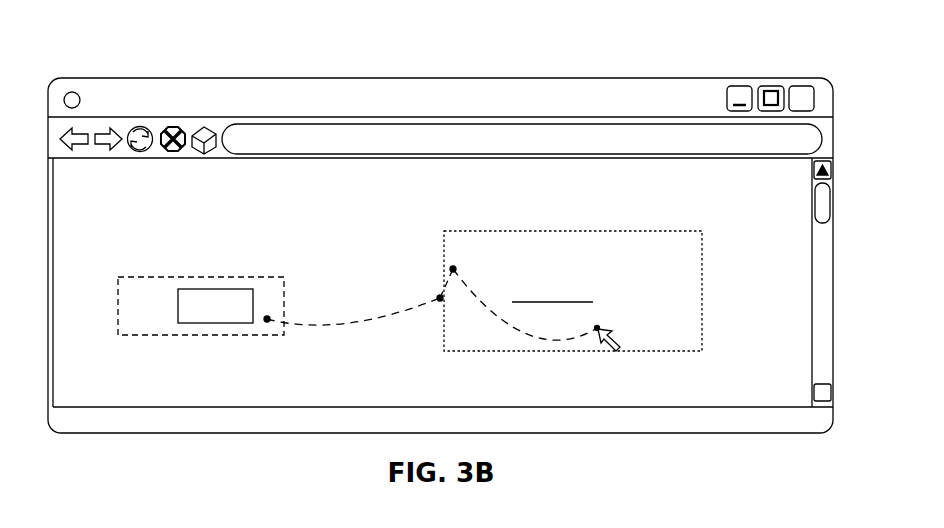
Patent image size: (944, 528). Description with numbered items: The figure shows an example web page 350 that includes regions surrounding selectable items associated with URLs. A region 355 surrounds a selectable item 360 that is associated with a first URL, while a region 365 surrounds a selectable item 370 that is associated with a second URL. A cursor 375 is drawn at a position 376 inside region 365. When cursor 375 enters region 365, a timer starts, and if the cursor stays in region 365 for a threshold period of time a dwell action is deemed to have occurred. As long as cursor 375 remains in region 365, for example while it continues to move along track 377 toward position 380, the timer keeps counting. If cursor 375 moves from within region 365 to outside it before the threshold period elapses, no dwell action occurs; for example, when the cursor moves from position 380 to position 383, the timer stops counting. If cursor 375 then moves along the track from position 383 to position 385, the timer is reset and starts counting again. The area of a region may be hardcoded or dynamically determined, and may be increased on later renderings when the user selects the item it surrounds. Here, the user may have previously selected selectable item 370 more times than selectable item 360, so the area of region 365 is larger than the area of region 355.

The web page 350 is at (563, 78).
The region 355 is at (175, 277).
The selectable item 360 is at (218, 289).
The region 365 is at (630, 231).
The selectable item 370 is at (567, 285).
The cursor 375 is at (618, 333).
The position 376 is at (596, 332).
The track 377 is at (520, 332).
The position 380 is at (453, 269).
The position 383 is at (440, 298).
The position 385 is at (267, 319).